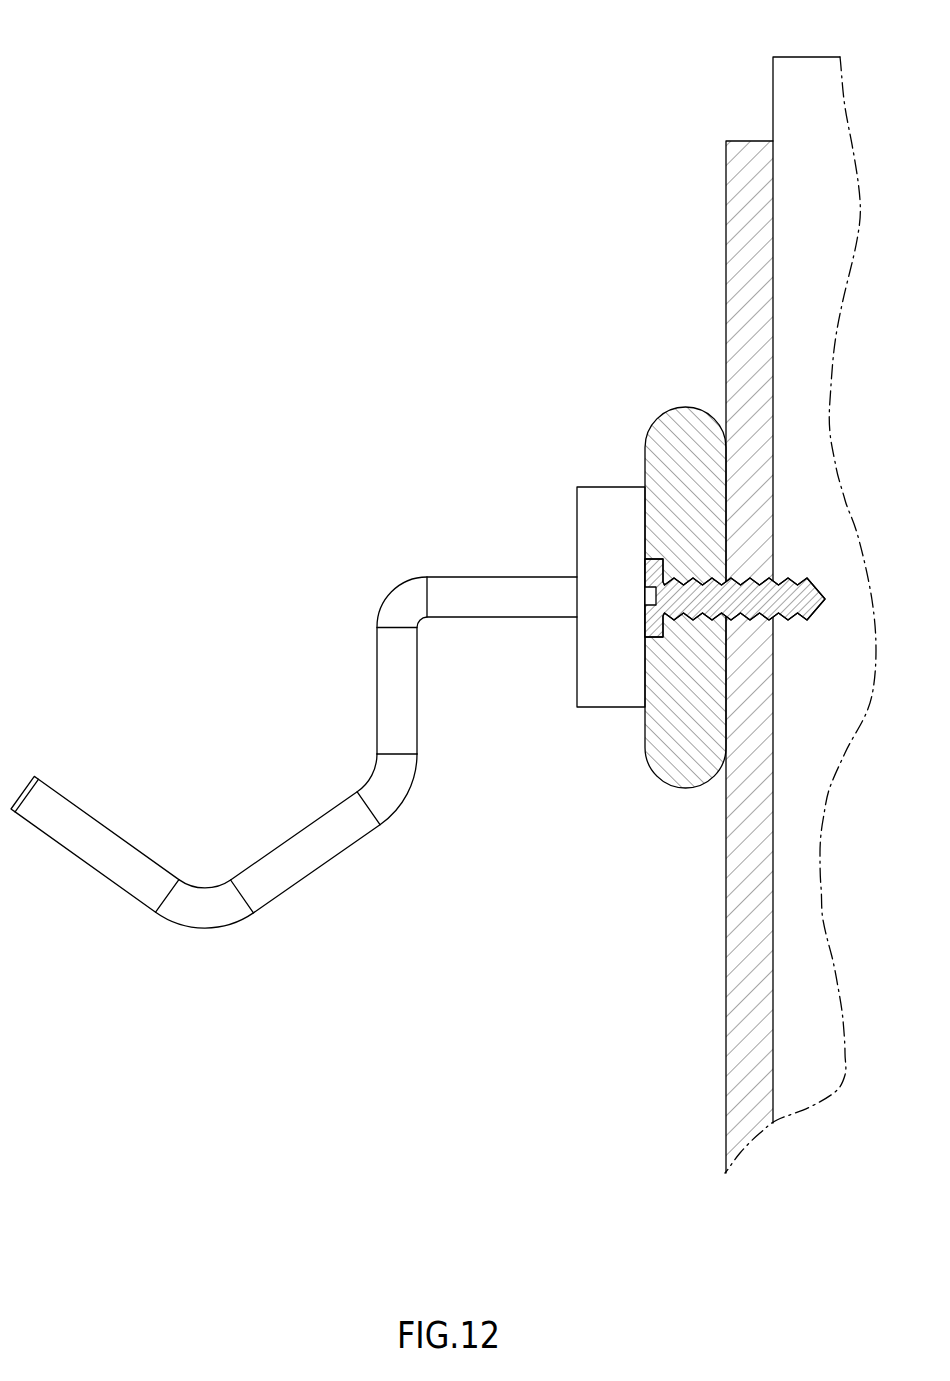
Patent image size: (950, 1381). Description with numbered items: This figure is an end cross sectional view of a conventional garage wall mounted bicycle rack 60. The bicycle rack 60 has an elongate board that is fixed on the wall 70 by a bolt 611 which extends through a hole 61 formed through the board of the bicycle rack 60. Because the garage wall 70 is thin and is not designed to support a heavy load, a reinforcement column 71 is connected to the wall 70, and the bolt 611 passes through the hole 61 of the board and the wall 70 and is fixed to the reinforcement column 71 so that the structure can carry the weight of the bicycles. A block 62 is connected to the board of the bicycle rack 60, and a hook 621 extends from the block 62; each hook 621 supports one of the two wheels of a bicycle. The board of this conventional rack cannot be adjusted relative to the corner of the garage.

The bicycle rack 60 is at (688, 433).
The hole 61 is at (697, 594).
The bolt 611 is at (693, 590).
The block 62 is at (618, 497).
The hook 621 is at (387, 678).
The wall 70 is at (743, 216).
The reinforcement column 71 is at (785, 106).